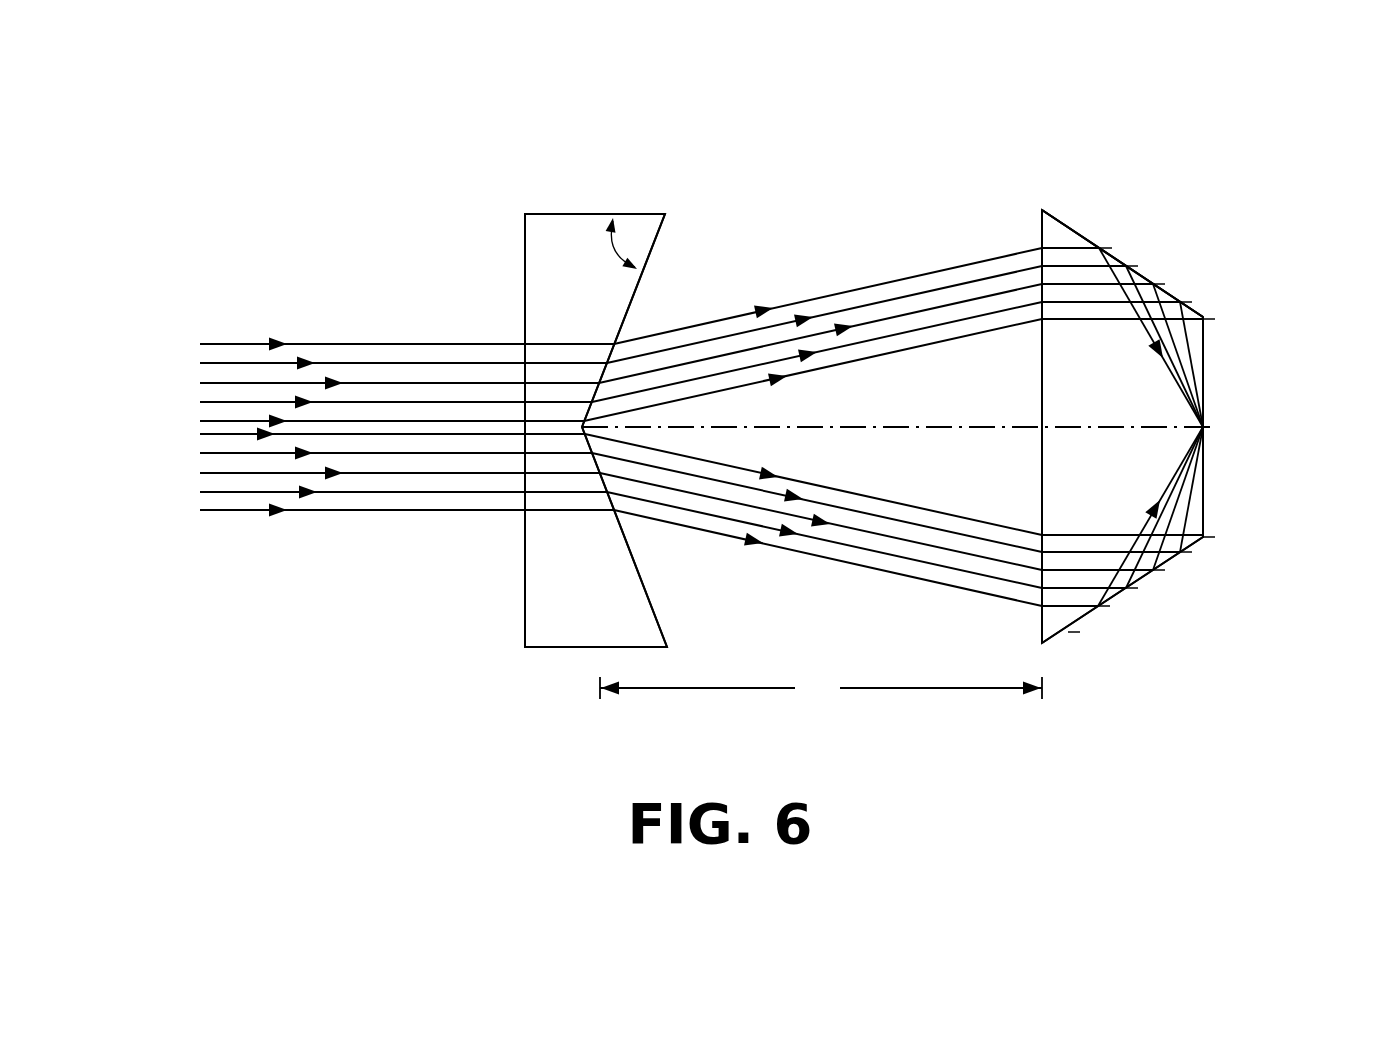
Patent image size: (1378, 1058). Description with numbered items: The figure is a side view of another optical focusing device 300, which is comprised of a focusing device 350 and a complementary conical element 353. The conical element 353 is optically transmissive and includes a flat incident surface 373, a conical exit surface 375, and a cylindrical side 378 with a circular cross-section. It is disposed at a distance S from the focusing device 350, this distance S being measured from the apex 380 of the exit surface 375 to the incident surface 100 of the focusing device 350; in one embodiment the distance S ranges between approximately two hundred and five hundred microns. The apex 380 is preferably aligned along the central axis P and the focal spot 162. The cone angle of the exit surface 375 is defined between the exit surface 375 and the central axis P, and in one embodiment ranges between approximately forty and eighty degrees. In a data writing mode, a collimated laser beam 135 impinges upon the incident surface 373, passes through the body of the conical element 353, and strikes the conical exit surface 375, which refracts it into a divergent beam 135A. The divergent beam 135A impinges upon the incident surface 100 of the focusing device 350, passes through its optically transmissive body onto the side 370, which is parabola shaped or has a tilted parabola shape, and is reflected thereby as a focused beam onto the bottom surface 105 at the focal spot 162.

The focusing device 300 is at (741, 90).
The conical element 353 is at (536, 207).
The flat incident surface 373 is at (525, 248).
The conical exit surface 375 is at (650, 262).
The cylindrical side 378 is at (550, 648).
The apex 380 is at (585, 428).
The collimated laser beam 135 is at (355, 343).
The divergent beam 135A is at (853, 290).
The incident surface 100 is at (1042, 230).
The focusing device 350 is at (1097, 224).
The side 370 is at (1133, 262).
The focal spot 162 is at (1207, 427).
The bottom surface 105 is at (1208, 520).
The central axis P is at (937, 427).
The distance S is at (821, 687).